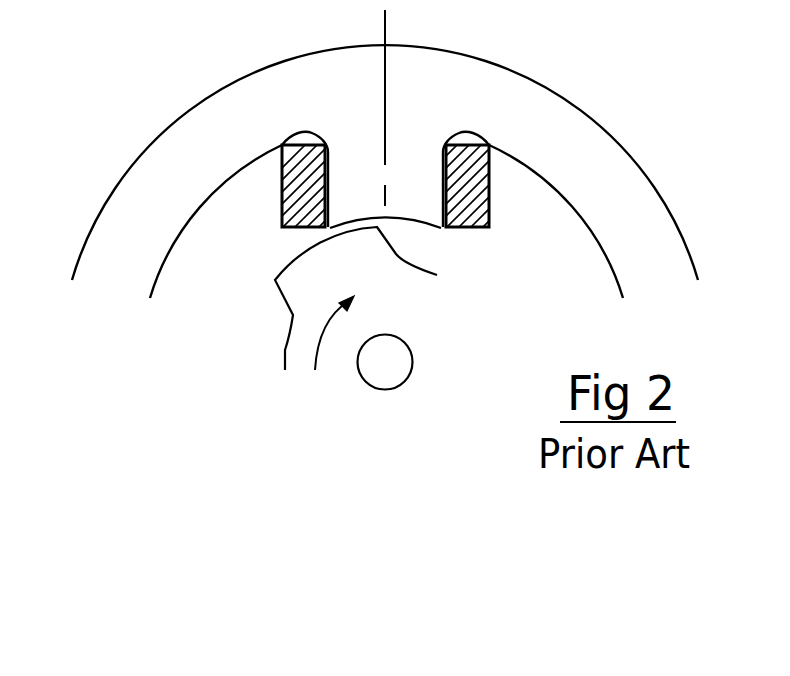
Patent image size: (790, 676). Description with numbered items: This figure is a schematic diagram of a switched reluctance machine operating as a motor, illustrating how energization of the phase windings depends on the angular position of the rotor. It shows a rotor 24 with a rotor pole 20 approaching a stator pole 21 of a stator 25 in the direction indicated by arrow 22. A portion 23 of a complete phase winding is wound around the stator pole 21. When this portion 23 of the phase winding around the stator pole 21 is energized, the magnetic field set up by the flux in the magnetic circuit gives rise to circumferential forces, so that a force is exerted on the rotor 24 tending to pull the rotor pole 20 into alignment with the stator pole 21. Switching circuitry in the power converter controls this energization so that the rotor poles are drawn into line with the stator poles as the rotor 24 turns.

The rotor pole 20 is at (323, 259).
The stator pole 21 is at (412, 160).
The arrow 22 is at (357, 325).
The portion of phase winding 23 is at (497, 207).
The rotor 24 is at (420, 328).
The stator 25 is at (555, 128).